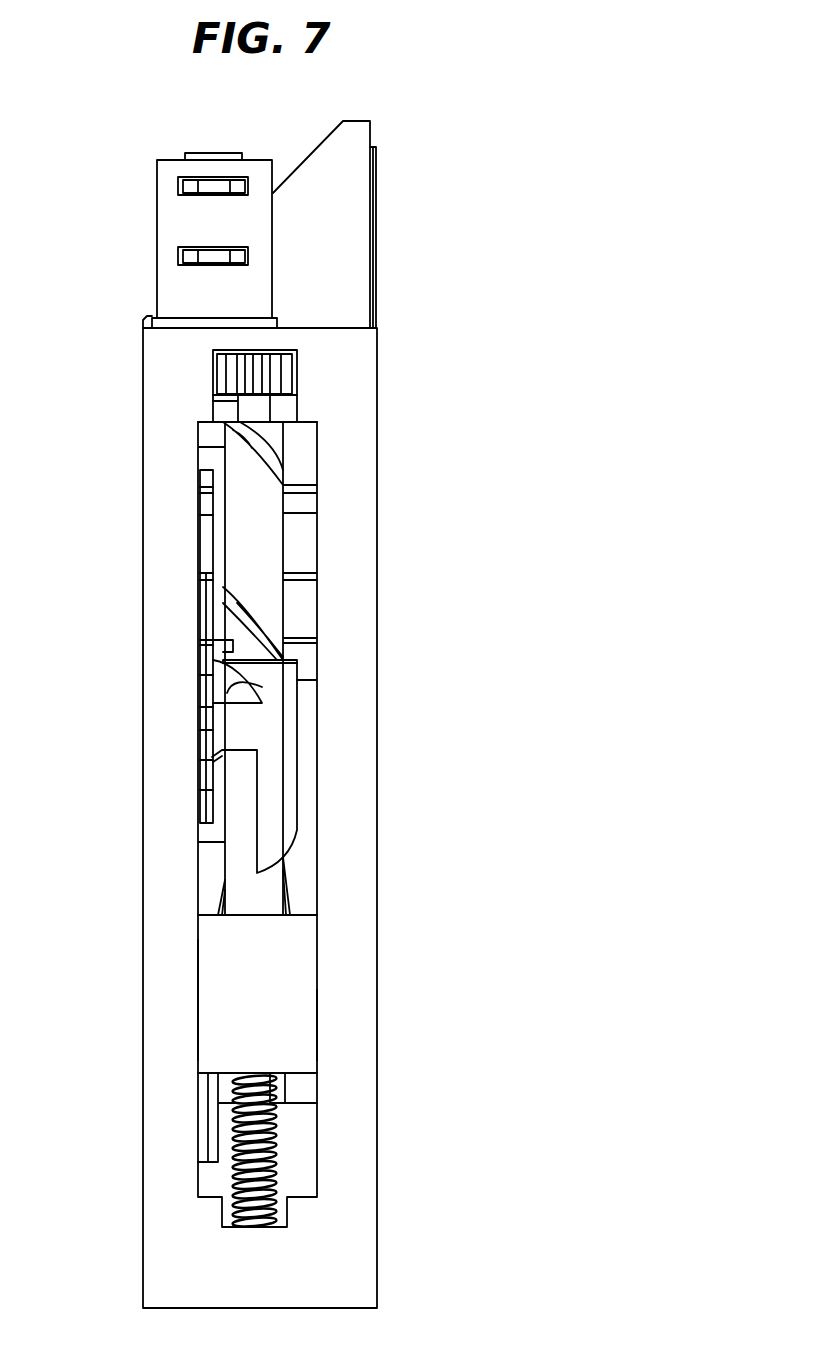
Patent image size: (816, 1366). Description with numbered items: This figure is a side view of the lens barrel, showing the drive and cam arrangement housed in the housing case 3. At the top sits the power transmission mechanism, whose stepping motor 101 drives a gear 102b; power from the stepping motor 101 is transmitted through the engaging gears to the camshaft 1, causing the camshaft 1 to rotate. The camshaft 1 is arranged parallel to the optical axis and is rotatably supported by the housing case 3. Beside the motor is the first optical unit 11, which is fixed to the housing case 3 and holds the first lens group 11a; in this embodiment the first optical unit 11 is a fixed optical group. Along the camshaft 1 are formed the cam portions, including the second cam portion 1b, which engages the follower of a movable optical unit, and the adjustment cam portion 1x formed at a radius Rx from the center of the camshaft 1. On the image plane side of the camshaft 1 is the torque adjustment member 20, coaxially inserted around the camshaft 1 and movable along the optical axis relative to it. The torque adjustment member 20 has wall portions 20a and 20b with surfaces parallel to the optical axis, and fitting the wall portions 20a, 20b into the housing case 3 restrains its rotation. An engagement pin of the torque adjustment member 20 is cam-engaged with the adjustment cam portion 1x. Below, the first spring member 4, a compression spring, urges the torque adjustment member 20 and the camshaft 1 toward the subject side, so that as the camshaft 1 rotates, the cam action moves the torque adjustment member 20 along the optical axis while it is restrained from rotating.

The stepping motor 101 is at (167, 220).
The first optical unit 11 is at (358, 185).
The first lens group 11a is at (373, 260).
The gear 102b is at (213, 370).
The housing case 3 is at (153, 437).
The camshaft 1 is at (237, 537).
The second cam portion 1b is at (297, 662).
The adjustment cam portion 1x is at (213, 758).
The torque adjustment member 20 is at (285, 963).
The wall portion 20a is at (198, 995).
The wall portion 20b is at (317, 1033).
The first spring member 4 is at (277, 1132).